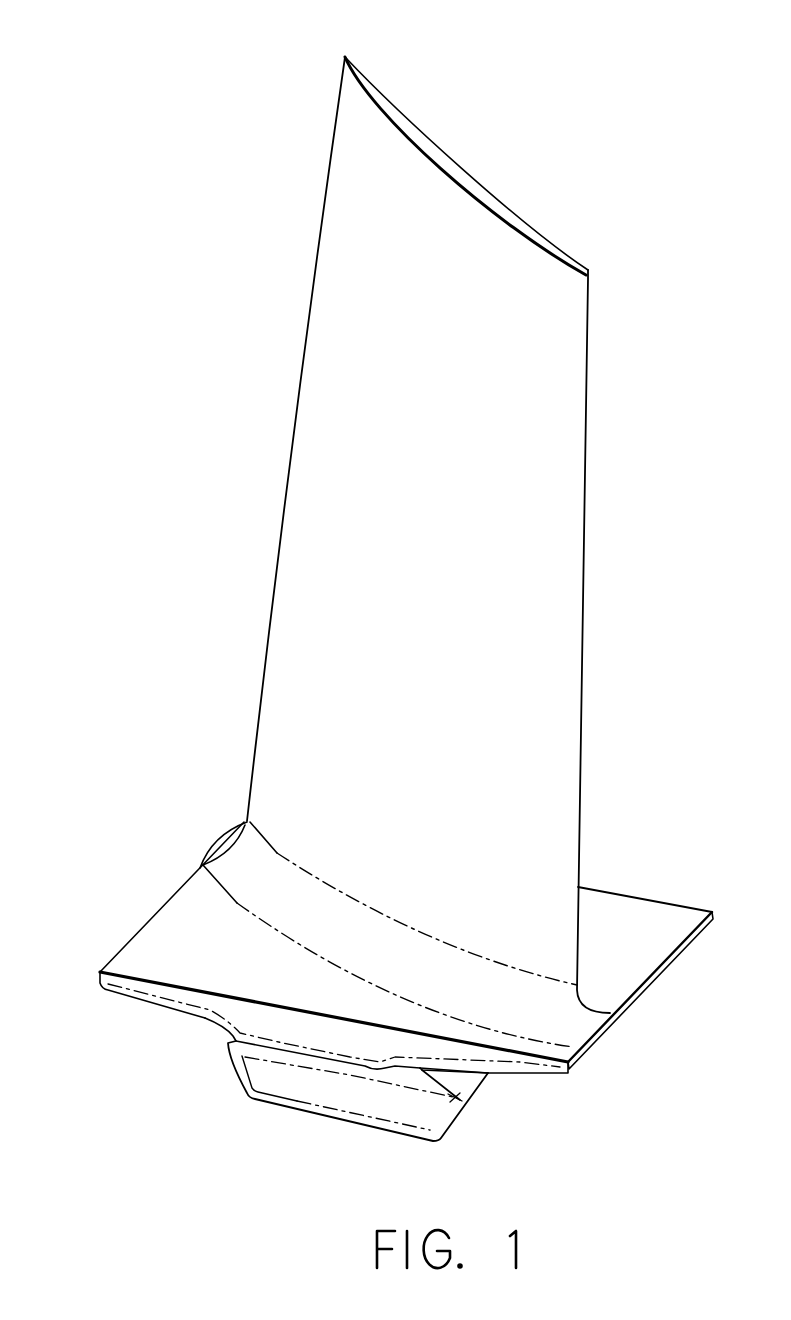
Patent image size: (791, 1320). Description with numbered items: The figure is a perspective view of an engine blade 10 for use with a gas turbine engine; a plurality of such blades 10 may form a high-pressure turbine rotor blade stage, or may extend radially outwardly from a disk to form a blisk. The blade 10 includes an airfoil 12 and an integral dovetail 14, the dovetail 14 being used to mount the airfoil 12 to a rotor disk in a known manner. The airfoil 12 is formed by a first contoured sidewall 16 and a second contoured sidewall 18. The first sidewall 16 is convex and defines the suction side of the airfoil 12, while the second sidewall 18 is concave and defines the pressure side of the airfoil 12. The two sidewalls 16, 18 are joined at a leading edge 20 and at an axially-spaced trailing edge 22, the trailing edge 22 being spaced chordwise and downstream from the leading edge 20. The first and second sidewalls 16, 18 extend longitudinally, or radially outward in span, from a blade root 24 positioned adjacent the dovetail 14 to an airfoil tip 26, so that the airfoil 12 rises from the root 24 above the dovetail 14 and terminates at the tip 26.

The engine blade 10 is at (135, 469).
The airfoil 12 is at (335, 52).
The dovetail 14 is at (476, 1098).
The first contoured sidewall 16 is at (350, 302).
The second contoured sidewall 18 is at (484, 190).
The leading edge 20 is at (275, 603).
The trailing edge 22 is at (588, 465).
The blade root 24 is at (300, 893).
The airfoil tip 26 is at (393, 118).